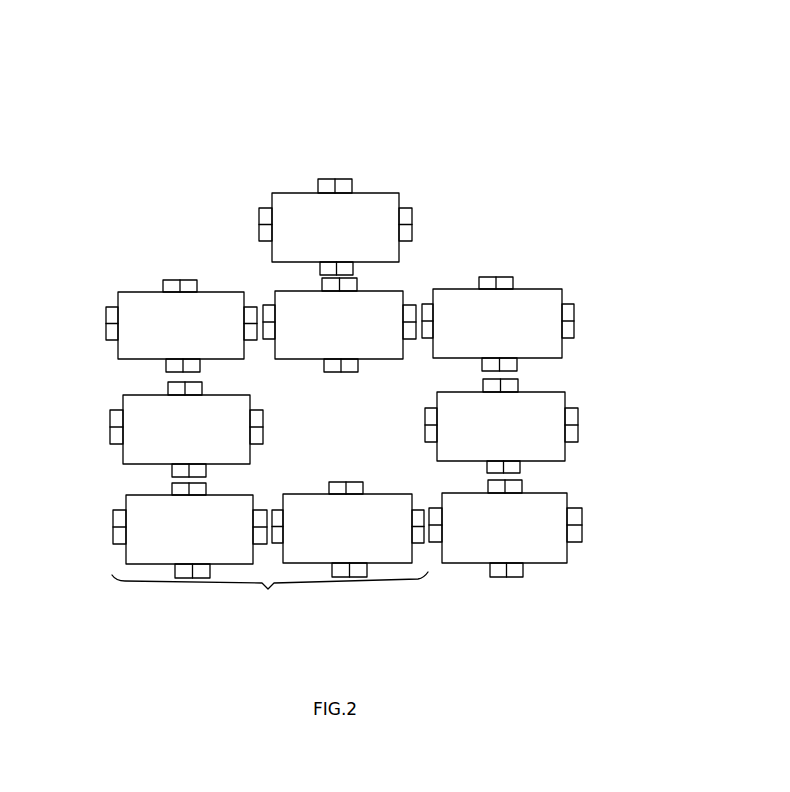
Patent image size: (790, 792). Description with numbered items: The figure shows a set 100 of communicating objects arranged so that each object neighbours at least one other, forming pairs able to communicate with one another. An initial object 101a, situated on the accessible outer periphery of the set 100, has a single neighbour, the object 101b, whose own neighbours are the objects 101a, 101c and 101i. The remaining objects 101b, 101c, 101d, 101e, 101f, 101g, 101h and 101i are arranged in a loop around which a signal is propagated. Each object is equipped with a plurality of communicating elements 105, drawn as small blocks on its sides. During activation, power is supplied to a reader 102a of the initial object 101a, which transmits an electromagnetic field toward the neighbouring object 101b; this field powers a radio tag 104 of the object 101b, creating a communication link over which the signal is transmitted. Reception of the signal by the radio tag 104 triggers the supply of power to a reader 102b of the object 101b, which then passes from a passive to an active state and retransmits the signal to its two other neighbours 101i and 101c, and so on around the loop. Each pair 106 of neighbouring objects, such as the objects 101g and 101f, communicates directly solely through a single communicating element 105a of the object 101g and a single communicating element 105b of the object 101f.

The set of communicating objects 100 is at (493, 237).
The initial object 101a is at (295, 208).
The communicating object 101b is at (388, 307).
The communicating object 101c is at (548, 300).
The communicating object 101d is at (543, 400).
The communicating object 101e is at (545, 515).
The communicating object 101f is at (386, 545).
The communicating object 101g is at (155, 546).
The communicating object 101h is at (148, 442).
The communicating object 101i is at (136, 340).
The reader 102a is at (325, 185).
The reader 102b is at (403, 330).
The radio tag 104 is at (348, 180).
The communicating element 105 is at (292, 165).
The communicating element 105a is at (254, 527).
The communicating element 105b is at (282, 526).
The pair of neighbouring objects 106 is at (270, 590).